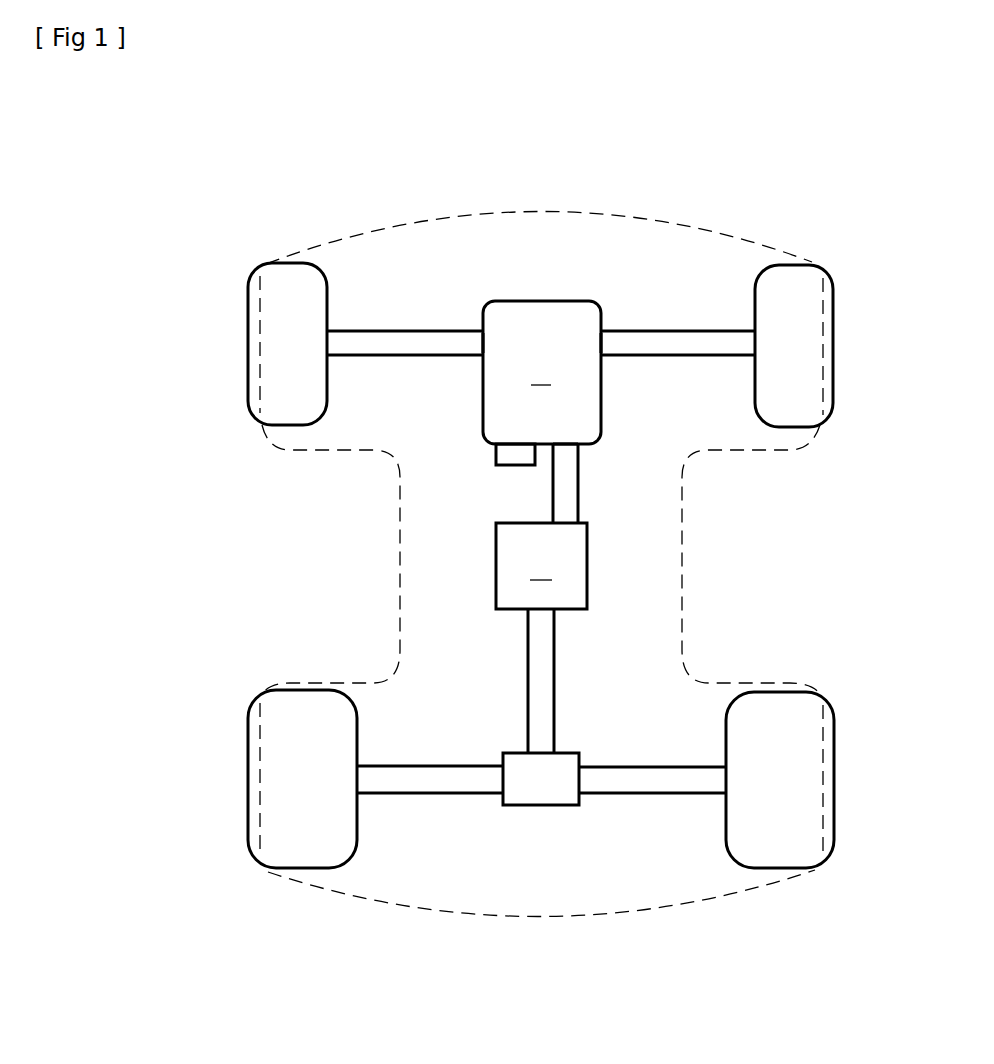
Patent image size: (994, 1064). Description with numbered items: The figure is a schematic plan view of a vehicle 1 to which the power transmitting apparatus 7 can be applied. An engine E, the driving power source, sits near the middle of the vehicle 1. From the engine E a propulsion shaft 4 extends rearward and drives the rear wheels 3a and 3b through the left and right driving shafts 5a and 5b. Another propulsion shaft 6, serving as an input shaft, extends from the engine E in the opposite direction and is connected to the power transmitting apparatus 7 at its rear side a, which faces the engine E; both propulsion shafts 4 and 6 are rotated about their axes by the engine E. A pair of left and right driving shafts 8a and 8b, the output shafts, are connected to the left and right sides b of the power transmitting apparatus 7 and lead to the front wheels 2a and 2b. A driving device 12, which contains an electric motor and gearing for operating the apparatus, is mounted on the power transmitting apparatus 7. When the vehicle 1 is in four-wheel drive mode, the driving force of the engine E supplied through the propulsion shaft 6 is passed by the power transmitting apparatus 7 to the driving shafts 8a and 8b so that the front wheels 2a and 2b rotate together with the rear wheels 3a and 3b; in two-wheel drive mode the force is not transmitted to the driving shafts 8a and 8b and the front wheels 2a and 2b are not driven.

The vehicle 1 is at (236, 211).
The front wheel 2a is at (248, 325).
The front wheel 2b is at (833, 325).
The rear wheel 3a is at (248, 757).
The rear wheel 3b is at (834, 752).
The propulsion shaft 4 is at (556, 664).
The driving shaft 5a is at (423, 766).
The driving shaft 5b is at (650, 767).
The propulsion shaft 6 is at (578, 498).
The power transmitting apparatus 7 is at (542, 372).
The driving shaft 8a is at (395, 331).
The driving shaft 8b is at (668, 331).
The driving device 12 is at (496, 455).
The rear side a is at (585, 458).
The side b is at (483, 318).
The engine E is at (541, 566).